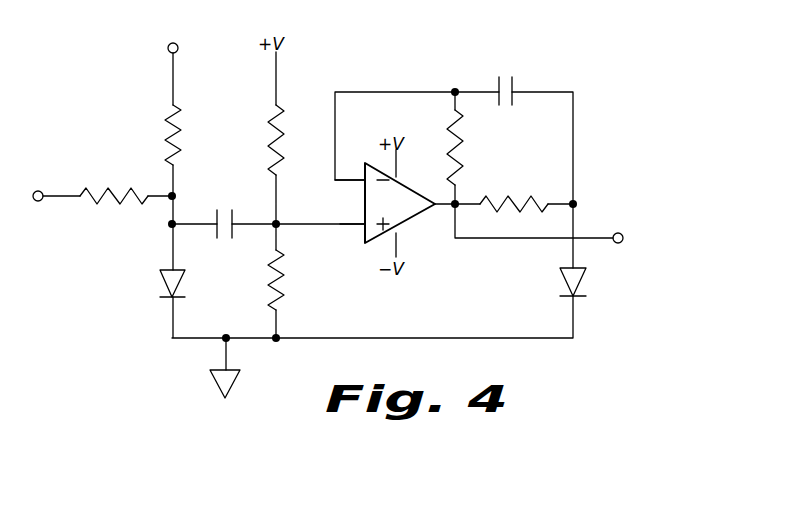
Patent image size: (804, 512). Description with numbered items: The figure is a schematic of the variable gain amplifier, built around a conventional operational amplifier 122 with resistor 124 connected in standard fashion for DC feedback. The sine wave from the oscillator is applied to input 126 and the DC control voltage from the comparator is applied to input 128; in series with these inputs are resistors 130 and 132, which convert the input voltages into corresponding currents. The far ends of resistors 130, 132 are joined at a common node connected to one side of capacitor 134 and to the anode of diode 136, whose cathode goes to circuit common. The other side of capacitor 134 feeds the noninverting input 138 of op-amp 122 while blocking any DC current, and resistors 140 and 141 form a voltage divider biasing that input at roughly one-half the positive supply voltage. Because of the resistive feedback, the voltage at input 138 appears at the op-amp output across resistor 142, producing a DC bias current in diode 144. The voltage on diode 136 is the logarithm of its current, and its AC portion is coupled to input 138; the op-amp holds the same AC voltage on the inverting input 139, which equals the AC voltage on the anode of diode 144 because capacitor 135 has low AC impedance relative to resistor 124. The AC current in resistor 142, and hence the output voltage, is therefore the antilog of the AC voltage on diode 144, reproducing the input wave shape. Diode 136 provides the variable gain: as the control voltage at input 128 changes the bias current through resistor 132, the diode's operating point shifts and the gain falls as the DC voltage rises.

The operational amplifier 122 is at (368, 243).
The resistor 124 is at (457, 159).
The input 126 is at (38, 190).
The input 128 is at (168, 47).
The resistor 130 is at (120, 199).
The resistor 132 is at (168, 134).
The capacitor 134 is at (258, 194).
The capacitor 135 is at (517, 85).
The diode 136 is at (160, 284).
The noninverting input 138 is at (364, 223).
The inverting input 139 is at (360, 182).
The resistor 140 is at (270, 290).
The resistor 141 is at (270, 141).
The resistor 142 is at (512, 197).
The diode 144 is at (588, 281).